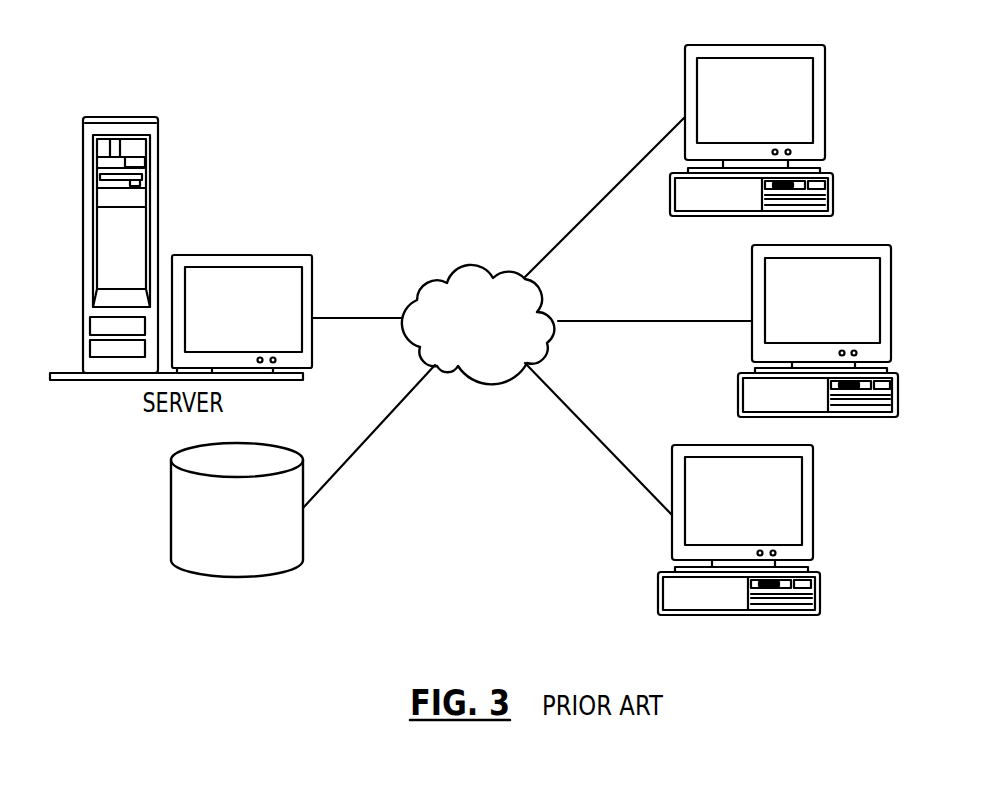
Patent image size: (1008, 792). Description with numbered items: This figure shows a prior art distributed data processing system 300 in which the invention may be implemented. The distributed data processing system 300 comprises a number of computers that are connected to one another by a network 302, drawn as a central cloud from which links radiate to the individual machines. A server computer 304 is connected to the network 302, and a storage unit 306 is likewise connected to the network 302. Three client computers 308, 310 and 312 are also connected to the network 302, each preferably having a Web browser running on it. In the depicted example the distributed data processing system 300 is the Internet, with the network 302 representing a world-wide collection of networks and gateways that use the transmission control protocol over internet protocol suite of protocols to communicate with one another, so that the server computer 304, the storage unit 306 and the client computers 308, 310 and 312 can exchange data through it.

The distributed data processing system 300 is at (371, 111).
The network 302 is at (497, 336).
The server computer 304 is at (262, 318).
The storage unit 306 is at (210, 532).
The client computer 308 is at (730, 112).
The client computer 310 is at (800, 321).
The client computer 312 is at (717, 511).